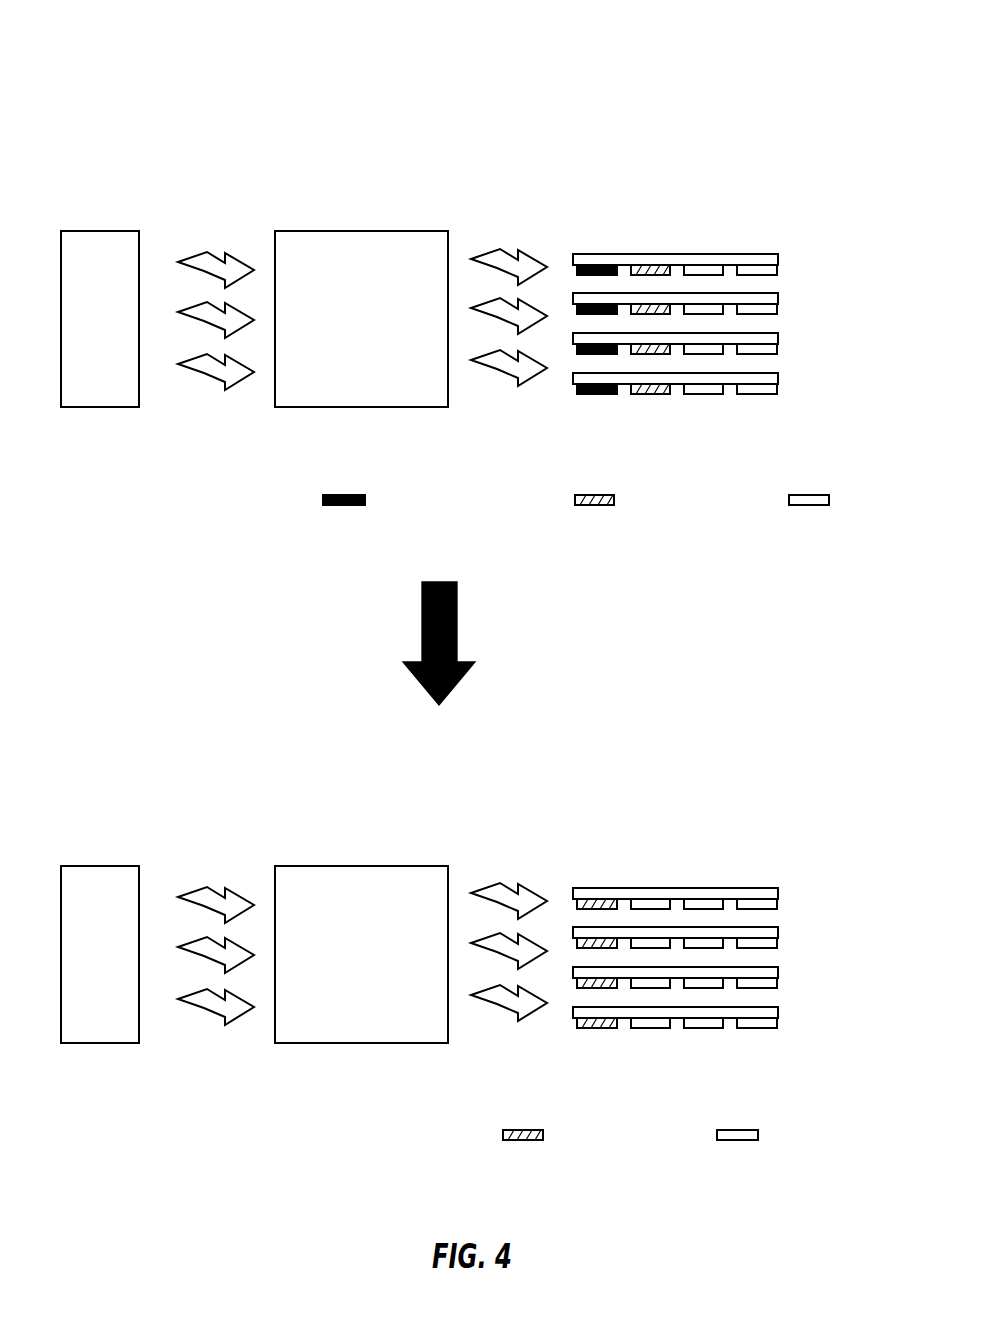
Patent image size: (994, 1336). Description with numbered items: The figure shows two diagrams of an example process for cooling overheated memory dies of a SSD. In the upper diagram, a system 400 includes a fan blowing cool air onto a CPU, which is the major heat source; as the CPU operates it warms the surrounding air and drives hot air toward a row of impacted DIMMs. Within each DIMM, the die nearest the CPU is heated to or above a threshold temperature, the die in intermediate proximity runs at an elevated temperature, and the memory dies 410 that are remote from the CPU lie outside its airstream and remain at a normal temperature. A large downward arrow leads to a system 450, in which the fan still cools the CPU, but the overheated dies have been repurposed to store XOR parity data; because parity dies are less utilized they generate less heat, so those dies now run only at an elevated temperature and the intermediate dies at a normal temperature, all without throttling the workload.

The system 400 is at (70, 20).
The system 450 is at (70, 660).
The memory dies 410 is at (755, 394).